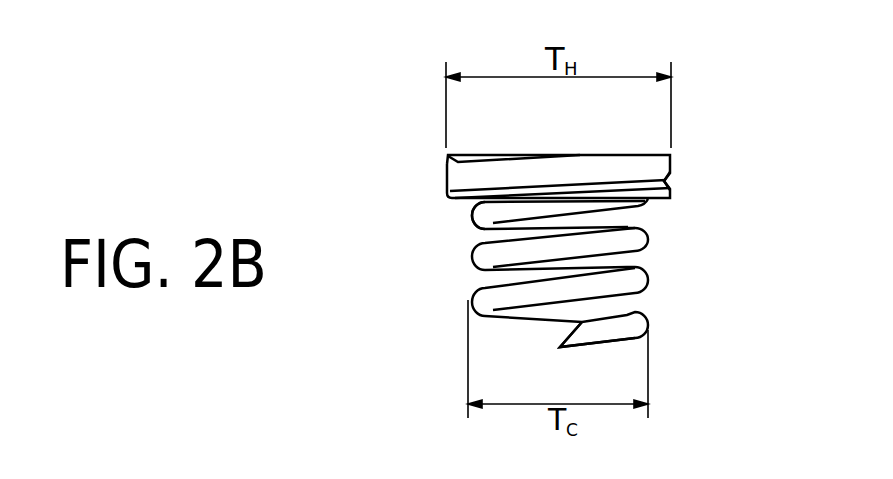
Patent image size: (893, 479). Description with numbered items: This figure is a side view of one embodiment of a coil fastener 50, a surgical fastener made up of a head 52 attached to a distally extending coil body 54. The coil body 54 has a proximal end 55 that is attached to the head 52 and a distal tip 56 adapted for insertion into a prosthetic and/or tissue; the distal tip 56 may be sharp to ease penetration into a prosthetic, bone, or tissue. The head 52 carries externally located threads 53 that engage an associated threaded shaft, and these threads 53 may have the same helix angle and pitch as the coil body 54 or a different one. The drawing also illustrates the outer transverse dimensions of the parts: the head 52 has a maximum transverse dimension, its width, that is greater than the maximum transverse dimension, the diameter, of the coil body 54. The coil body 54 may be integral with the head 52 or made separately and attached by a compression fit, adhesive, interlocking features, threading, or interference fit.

The coil fastener 50 is at (426, 140).
The head 52 is at (670, 160).
The threads 53 is at (676, 182).
The coil body 54 is at (632, 280).
The proximal end 55 is at (462, 223).
The distal tip 56 is at (551, 344).